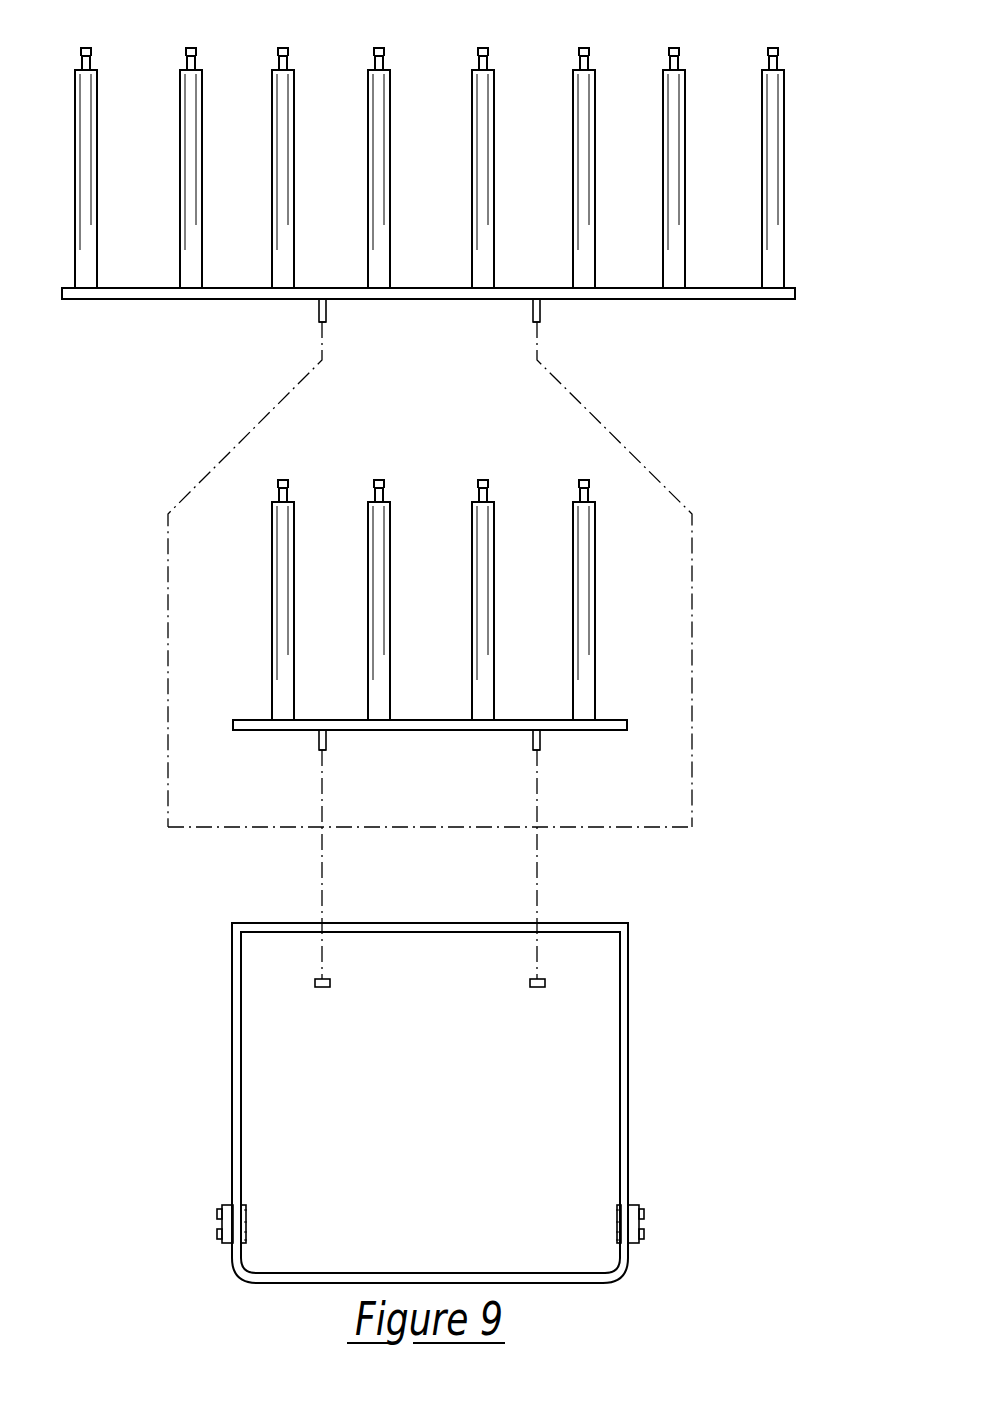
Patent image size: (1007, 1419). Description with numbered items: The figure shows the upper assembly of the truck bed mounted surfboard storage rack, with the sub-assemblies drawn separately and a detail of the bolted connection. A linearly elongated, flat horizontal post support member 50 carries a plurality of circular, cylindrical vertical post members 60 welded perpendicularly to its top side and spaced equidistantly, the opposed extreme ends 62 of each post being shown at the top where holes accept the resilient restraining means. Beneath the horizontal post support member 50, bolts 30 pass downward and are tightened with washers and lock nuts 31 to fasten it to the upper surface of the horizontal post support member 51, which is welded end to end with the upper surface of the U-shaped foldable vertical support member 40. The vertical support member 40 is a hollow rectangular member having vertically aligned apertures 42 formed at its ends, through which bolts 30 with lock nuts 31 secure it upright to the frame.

The bolt 30 is at (541, 307).
The lock nut 31 is at (538, 323).
The foldable vertical support member 40 is at (232, 1080).
The aperture 42 is at (323, 288).
The horizontal post support member 50 is at (795, 290).
The horizontal post support member 51 is at (232, 925).
The vertical post member 60 is at (194, 48).
The extreme end 62 is at (91, 57).